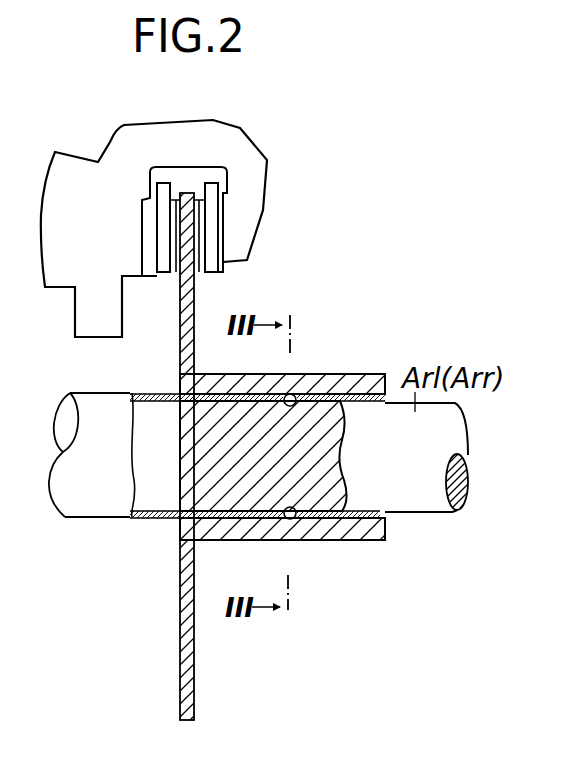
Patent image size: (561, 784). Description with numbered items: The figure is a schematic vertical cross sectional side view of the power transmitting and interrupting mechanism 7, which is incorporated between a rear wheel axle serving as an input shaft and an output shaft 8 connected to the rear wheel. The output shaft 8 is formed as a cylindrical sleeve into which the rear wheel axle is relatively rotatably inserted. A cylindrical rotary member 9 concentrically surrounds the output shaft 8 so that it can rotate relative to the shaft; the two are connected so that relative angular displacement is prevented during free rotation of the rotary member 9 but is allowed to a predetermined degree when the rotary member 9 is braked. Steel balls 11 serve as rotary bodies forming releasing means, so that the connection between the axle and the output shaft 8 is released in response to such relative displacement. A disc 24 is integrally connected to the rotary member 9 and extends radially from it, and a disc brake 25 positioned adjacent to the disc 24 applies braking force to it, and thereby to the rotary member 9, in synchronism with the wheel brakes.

The power transmitting and interrupting mechanism 7 is at (305, 366).
The output shaft 8 is at (108, 512).
The cylindrical rotary member 9 is at (333, 535).
The steel ball 11 is at (289, 522).
The disc 24 is at (194, 675).
The disc brake 25 is at (248, 233).